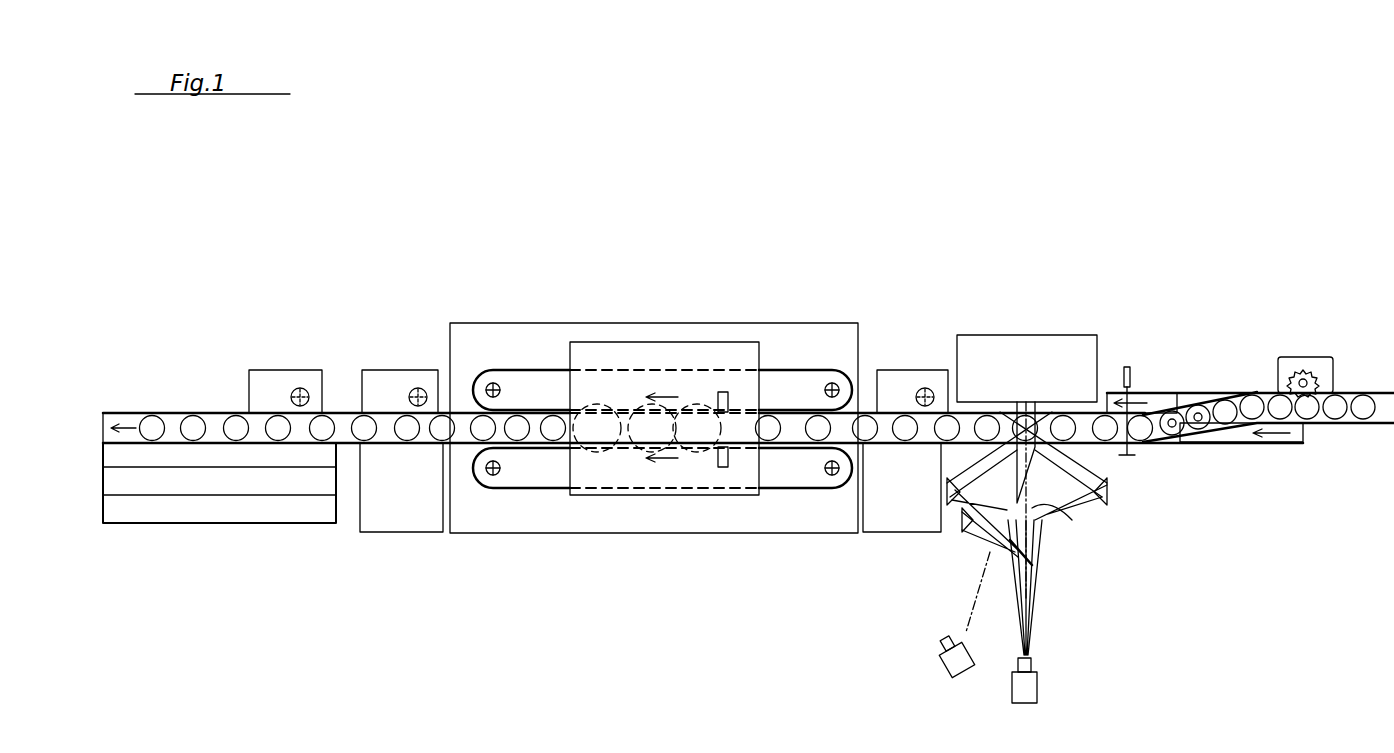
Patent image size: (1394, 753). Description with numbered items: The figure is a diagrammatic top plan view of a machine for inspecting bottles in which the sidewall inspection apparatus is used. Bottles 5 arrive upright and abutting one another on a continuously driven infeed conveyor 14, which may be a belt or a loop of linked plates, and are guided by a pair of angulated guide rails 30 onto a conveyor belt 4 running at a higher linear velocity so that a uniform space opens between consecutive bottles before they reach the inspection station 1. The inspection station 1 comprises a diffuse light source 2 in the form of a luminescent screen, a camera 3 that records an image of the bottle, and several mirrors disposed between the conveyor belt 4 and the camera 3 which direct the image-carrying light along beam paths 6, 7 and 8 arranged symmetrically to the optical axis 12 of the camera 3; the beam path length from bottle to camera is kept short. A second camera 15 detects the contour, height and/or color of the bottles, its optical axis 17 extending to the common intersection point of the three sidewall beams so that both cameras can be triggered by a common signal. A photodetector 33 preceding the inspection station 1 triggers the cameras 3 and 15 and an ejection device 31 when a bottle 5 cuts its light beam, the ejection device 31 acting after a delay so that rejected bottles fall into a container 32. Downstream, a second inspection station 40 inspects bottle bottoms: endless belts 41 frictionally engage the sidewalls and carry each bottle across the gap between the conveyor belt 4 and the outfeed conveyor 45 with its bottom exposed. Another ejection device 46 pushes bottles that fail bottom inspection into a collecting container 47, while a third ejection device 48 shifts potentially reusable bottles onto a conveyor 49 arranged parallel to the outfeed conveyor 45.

The inspection station 1 is at (1027, 568).
The diffuse light source 2 is at (1008, 362).
The camera 3 is at (1040, 684).
The conveyor belt 4 is at (1292, 446).
The bottles 5 is at (1198, 406).
The beam path 6 is at (1100, 507).
The beam path 7 is at (956, 508).
The beam path 8 is at (964, 536).
The optical axis 12 is at (1060, 512).
The infeed conveyor 14 is at (1345, 392).
The second camera 15 is at (958, 672).
The optical axis 17 is at (975, 617).
The inclined belt 30 is at (1237, 393).
The ejection device 31 is at (928, 388).
The container 32 is at (893, 520).
The photodetector 33 is at (1127, 365).
The second inspection station 40 is at (652, 538).
The endless belts 41 is at (530, 372).
The outfeed conveyor 45 is at (174, 424).
The ejection device 46 is at (418, 388).
The collecting container 47 is at (400, 505).
The third ejection device 48 is at (300, 388).
The conveyor 49 is at (176, 498).